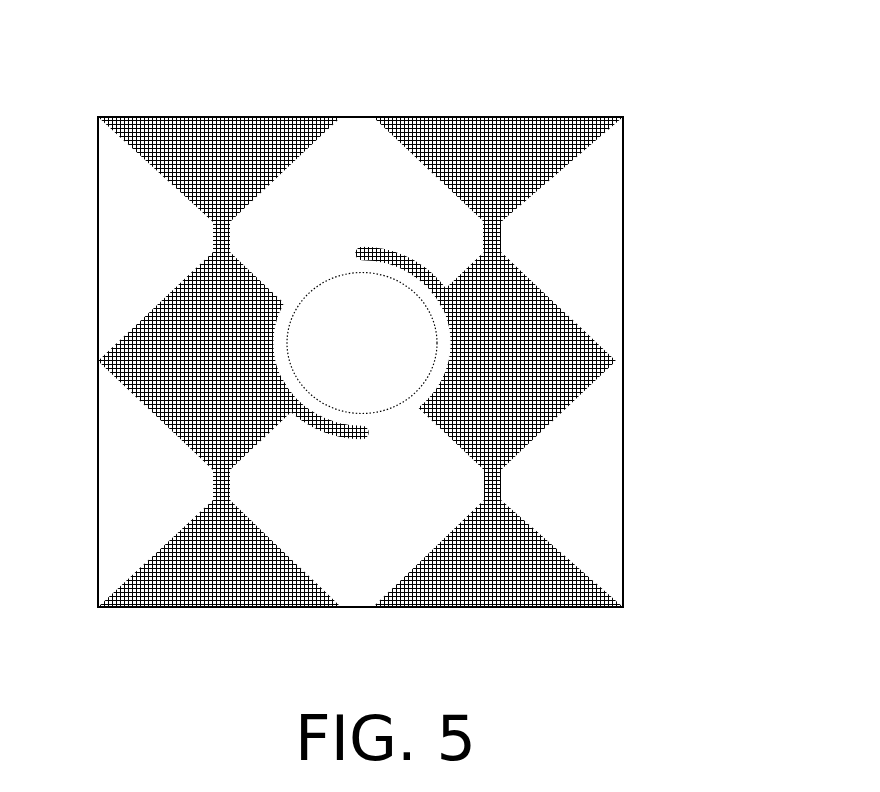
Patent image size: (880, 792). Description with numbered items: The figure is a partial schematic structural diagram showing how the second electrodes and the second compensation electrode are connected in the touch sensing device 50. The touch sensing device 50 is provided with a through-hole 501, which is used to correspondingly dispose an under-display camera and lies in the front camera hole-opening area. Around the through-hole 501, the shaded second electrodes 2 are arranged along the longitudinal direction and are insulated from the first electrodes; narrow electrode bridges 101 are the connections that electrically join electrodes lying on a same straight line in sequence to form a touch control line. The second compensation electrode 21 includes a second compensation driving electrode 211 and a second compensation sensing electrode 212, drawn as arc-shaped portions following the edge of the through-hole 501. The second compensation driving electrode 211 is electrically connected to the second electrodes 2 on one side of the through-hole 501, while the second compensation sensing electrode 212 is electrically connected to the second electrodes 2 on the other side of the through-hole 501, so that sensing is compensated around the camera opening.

The touch sensing device 50 is at (93, 80).
The through-hole 501 is at (362, 328).
The second electrode 2 is at (525, 395).
The electrode bridge 101 is at (488, 235).
The second compensation electrode 21 is at (381, 356).
The second compensation driving electrode 211 is at (415, 268).
The second compensation sensing electrode 212 is at (336, 434).